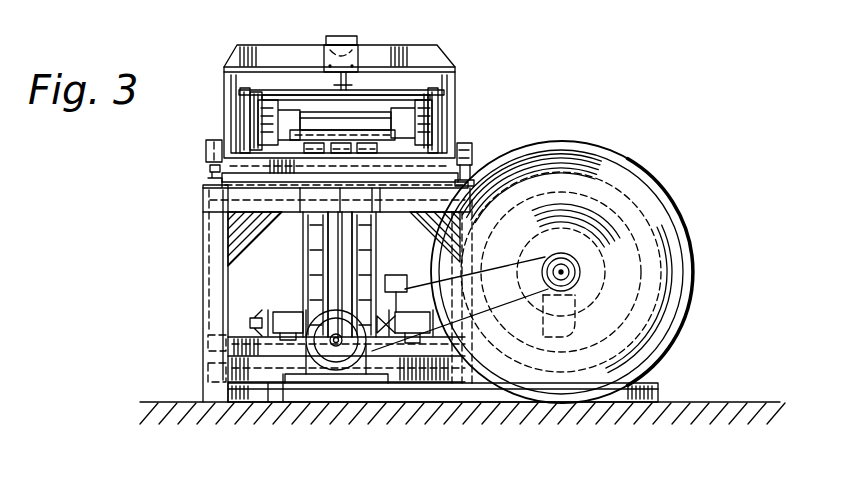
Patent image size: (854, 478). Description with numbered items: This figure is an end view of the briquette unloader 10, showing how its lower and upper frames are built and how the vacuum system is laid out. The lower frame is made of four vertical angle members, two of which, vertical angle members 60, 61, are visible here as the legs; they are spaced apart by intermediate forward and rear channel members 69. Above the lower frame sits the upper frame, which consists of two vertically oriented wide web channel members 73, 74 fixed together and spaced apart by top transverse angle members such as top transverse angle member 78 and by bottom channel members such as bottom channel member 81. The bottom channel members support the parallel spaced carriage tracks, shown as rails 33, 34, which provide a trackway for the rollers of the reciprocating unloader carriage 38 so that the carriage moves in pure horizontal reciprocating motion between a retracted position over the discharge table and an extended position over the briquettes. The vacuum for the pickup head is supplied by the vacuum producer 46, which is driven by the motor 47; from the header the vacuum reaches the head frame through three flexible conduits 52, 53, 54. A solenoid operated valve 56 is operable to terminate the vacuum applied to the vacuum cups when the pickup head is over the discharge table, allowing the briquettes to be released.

The briquette unloader 10 is at (205, 308).
The rail 33 is at (262, 148).
The rail 34 is at (470, 145).
The unloader carriage 38 is at (316, 103).
The vacuum producer 46 is at (640, 164).
The motor 47 is at (333, 346).
The flexible conduit 52 is at (315, 278).
The flexible conduit 53 is at (333, 240).
The flexible conduit 54 is at (364, 250).
The solenoid operated valve 56 is at (405, 334).
The vertical angle member 60 is at (218, 284).
The vertical angle member 61 is at (550, 152).
The channel member 69 is at (258, 223).
The wide web channel member 73 is at (226, 116).
The wide web channel member 74 is at (458, 80).
The top transverse angle member 78 is at (272, 58).
The bottom channel member 81 is at (262, 192).